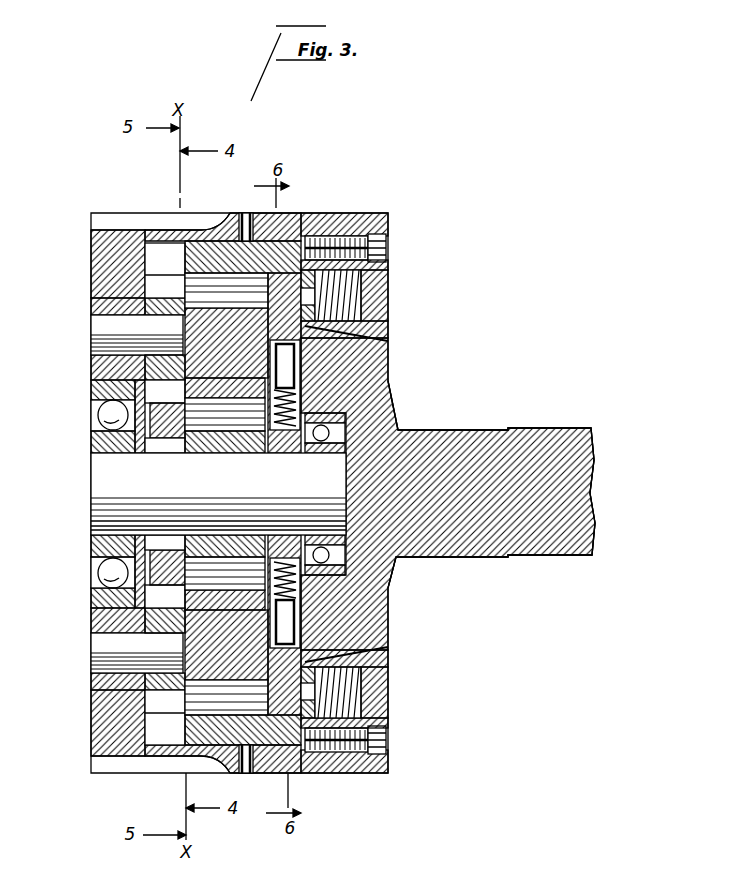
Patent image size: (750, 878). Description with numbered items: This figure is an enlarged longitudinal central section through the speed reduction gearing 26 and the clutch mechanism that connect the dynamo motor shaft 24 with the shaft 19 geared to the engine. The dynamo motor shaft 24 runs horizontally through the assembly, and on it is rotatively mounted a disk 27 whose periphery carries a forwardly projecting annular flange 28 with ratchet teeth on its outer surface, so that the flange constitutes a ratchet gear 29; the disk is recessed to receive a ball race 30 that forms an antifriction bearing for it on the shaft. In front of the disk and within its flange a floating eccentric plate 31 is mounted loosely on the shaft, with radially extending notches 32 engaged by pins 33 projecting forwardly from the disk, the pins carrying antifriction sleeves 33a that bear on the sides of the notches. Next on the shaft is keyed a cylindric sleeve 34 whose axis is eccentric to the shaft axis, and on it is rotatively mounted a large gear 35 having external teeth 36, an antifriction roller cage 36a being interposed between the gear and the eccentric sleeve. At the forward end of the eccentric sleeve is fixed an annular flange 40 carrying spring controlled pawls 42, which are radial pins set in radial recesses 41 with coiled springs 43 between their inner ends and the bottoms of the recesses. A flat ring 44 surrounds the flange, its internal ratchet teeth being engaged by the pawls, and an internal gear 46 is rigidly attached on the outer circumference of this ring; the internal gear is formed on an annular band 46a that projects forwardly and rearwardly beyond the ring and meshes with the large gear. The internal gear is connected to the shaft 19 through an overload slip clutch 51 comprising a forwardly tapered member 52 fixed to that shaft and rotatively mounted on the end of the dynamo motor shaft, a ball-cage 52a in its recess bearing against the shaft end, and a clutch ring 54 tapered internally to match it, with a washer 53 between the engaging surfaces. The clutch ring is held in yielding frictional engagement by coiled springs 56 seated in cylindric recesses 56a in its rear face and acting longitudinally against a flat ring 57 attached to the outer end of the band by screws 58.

The shaft 19 is at (476, 426).
The dynamo motor shaft 24 is at (108, 463).
The speed reduction gearing 26 is at (393, 421).
The disk 27 is at (105, 283).
The annular flange 28 is at (146, 760).
The ratchet gear 29 is at (92, 218).
The ball race 30 is at (92, 538).
The floating eccentric plate 31 is at (120, 405).
The notches 32 is at (150, 278).
The pins 33 is at (95, 321).
The antifriction sleeves 33a is at (135, 300).
The cylindric sleeve 34 is at (190, 433).
The large gear 35 is at (250, 310).
The external teeth 36 is at (185, 252).
The antifriction roller cage 36a is at (200, 562).
The annular flange 40 is at (290, 627).
The radial recesses 41 is at (296, 611).
The spring controlled pawls 42 is at (383, 306).
The coiled springs 43 is at (300, 601).
The flat ring 44 is at (238, 762).
The internal gear 46 is at (283, 245).
The annular band 46a is at (215, 250).
The overload slip clutch 51 is at (383, 361).
The forwardly tapered member 52 is at (383, 573).
The ball-cage 52a is at (408, 381).
The washer 53 is at (383, 334).
The clutch ring 54 is at (383, 661).
The coiled springs 56 is at (383, 284).
The cylindric recesses 56a is at (383, 694).
The flat ring 57 is at (383, 211).
The screws 58 is at (383, 234).